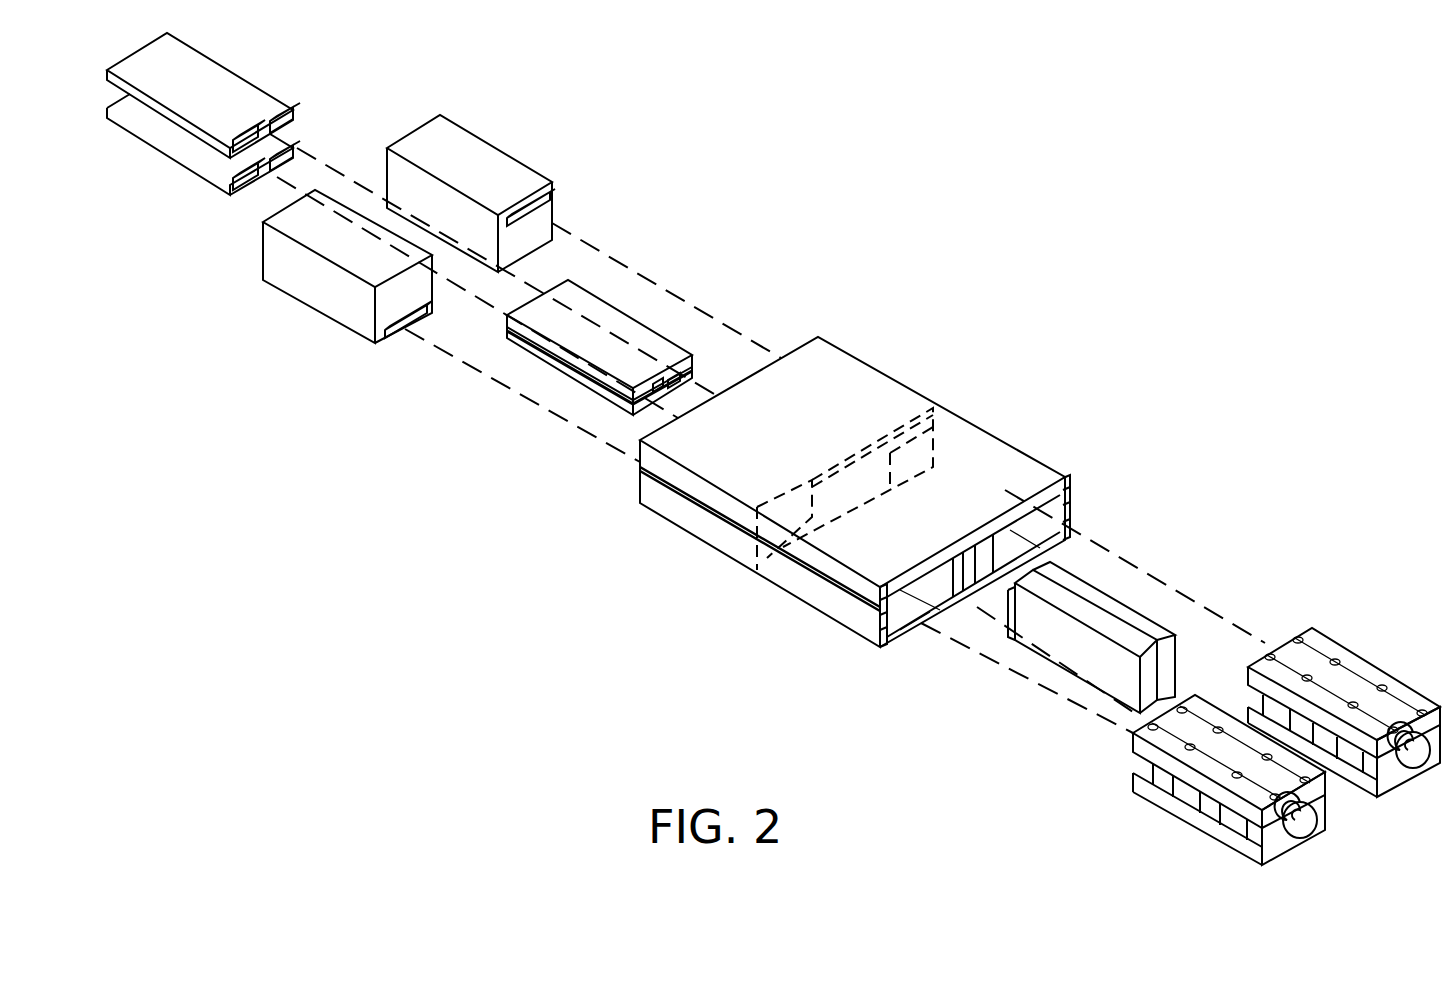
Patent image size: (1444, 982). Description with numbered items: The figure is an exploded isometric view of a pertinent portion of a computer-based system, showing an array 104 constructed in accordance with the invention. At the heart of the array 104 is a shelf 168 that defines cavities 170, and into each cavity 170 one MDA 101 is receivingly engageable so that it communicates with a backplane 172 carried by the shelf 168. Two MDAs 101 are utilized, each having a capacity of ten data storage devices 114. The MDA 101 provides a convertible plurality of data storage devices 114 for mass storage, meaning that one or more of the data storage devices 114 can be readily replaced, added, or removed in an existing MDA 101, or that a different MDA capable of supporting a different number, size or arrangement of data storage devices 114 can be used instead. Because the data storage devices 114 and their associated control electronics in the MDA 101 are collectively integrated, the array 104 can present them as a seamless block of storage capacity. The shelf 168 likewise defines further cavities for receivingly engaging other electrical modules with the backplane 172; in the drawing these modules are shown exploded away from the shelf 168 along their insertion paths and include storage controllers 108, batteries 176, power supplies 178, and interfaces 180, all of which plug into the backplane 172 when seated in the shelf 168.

The MDA 101 is at (1237, 722).
The array 104 is at (948, 263).
The storage controller 108 is at (1113, 597).
The data storage device 114 is at (1248, 673).
The shelf 168 is at (720, 544).
The cavity 170 is at (1073, 507).
The backplane 172 is at (857, 418).
The battery 176 is at (627, 323).
The power supply 178 is at (480, 150).
The interface 180 is at (242, 102).